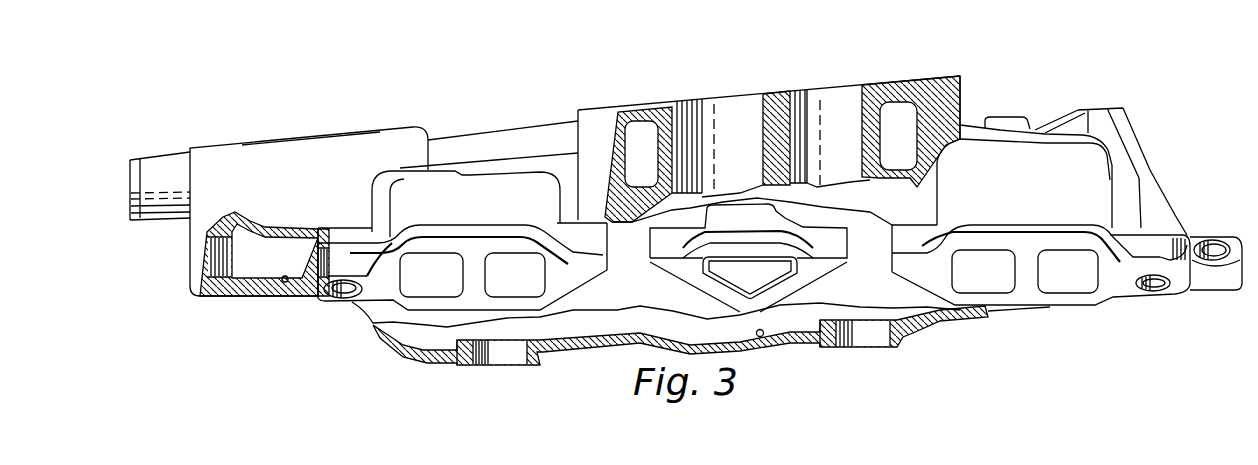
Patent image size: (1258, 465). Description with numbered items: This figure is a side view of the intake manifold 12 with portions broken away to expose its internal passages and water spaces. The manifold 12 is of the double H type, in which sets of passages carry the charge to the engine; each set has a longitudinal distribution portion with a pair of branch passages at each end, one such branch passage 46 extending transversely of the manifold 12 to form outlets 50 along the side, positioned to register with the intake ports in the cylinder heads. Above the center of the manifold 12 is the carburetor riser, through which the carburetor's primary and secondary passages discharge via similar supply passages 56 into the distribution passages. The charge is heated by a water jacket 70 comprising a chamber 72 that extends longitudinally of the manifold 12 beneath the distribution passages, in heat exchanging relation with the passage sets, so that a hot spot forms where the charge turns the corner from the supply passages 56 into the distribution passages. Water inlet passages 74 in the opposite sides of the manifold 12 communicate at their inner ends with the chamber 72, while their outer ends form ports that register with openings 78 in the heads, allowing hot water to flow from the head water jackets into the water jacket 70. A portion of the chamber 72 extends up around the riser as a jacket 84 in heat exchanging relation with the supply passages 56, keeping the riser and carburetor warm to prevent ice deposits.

The intake manifold 12 is at (376, 352).
The branch passage 46 is at (492, 254).
The outlets 50 is at (460, 274).
The supply passages 56 is at (752, 110).
The water jacket 70 is at (287, 282).
The chamber 72 is at (253, 262).
The water inlet passages 74 is at (703, 276).
The openings 78 is at (790, 277).
The jacket 84 is at (637, 118).